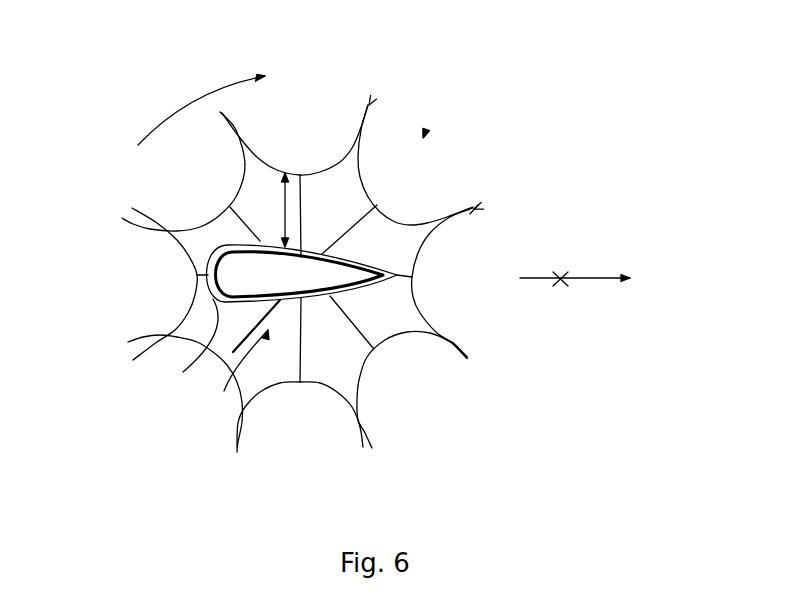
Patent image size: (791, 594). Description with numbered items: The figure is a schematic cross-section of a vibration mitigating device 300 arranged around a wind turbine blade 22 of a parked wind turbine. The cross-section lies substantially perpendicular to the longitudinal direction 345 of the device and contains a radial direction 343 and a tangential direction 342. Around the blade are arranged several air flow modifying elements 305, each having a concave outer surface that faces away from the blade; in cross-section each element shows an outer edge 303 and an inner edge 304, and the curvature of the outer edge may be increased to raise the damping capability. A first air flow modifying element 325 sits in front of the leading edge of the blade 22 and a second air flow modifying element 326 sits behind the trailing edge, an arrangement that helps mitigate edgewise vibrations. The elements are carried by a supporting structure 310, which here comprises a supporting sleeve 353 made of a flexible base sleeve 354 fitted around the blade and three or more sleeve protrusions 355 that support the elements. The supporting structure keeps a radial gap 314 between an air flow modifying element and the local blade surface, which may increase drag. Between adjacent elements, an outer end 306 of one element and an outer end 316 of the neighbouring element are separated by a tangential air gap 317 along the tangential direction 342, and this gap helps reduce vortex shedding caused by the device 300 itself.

The wind turbine blade 22 is at (200, 301).
The vibration mitigating device 300 is at (424, 136).
The outer edge 303 is at (437, 222).
The inner edge 304 is at (343, 169).
The air flow modifying element 305 is at (177, 237).
The outer end of first air flow modifying element 306 is at (470, 214).
The supporting structure 310 is at (223, 250).
The radial gap 314 is at (272, 182).
The outer end of second air flow modifying element 316 is at (476, 208).
The tangential air gap 317 is at (371, 105).
The first air flow modifying element 325 is at (188, 312).
The second air flow modifying element 326 is at (420, 311).
The tangential direction 342 is at (190, 98).
The radial direction 343 is at (606, 280).
The longitudinal direction 345 is at (558, 278).
The supporting sleeve 353 is at (236, 371).
The flexible base sleeve 354 is at (189, 346).
The sleeve protrusion 355 is at (233, 352).